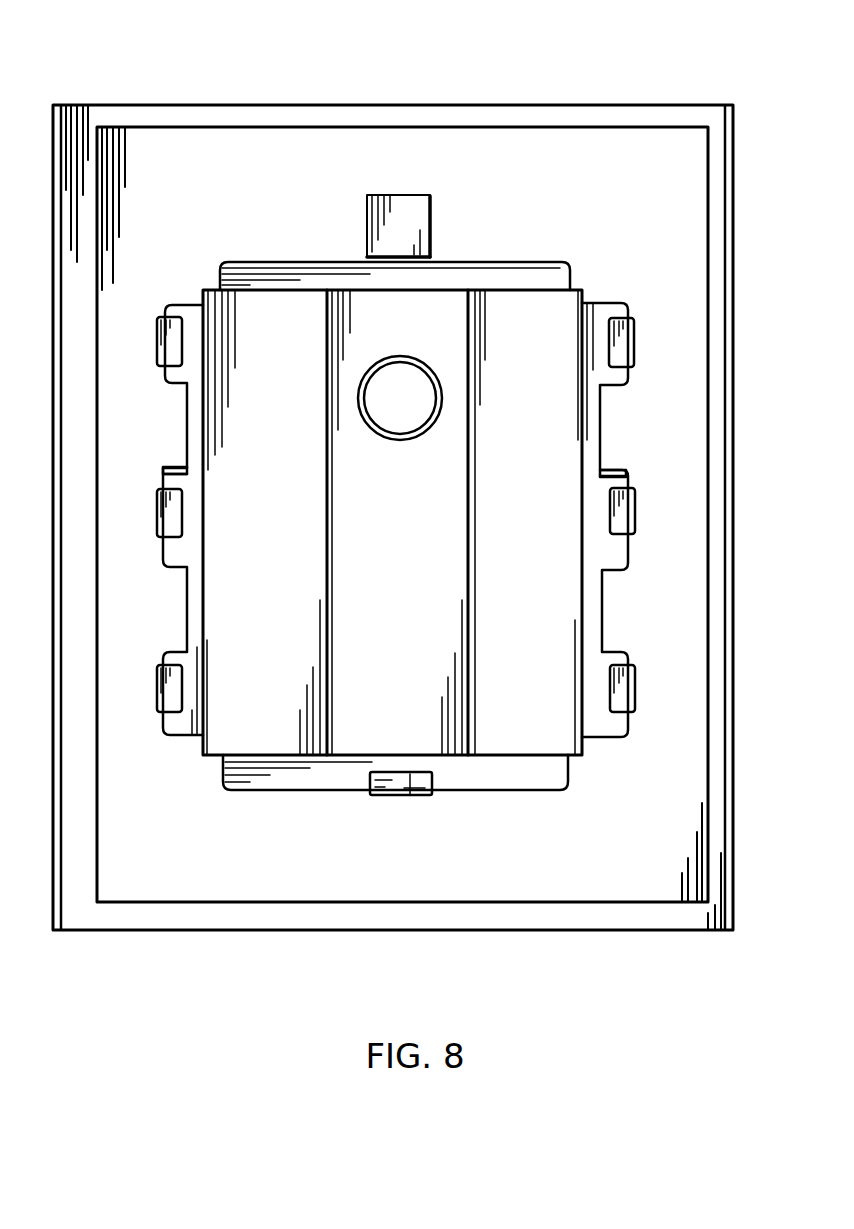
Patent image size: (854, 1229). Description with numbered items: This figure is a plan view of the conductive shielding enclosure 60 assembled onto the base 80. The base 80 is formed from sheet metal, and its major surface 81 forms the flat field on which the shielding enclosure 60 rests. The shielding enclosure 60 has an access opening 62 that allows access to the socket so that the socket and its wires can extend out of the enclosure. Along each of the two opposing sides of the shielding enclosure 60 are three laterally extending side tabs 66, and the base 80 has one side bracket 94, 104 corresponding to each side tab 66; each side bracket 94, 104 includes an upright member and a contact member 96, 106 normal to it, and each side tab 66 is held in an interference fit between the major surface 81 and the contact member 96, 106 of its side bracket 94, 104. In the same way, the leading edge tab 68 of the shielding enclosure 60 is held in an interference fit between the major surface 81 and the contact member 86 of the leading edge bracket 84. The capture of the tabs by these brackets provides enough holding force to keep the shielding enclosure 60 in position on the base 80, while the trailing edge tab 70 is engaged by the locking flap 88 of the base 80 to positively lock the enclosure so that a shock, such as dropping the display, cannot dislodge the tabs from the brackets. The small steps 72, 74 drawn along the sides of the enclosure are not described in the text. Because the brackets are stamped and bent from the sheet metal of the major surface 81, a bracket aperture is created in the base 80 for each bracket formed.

The base 80 is at (466, 88).
The major surface 81 is at (237, 163).
The shielding enclosure 60 is at (344, 246).
The access opening 62 is at (402, 386).
The side tab 66 is at (175, 306).
The leading edge tab 68 is at (520, 772).
The trailing edge tab 70 is at (510, 272).
The right tab 72 is at (620, 468).
The left tab 74 is at (170, 466).
The leading edge bracket 84 is at (390, 802).
The contact member 86 is at (407, 787).
The locking flap 88 is at (400, 212).
The side bracket 94 is at (150, 348).
The contact member 96 is at (160, 350).
The side bracket 104 is at (648, 343).
The contact member 106 is at (630, 340).